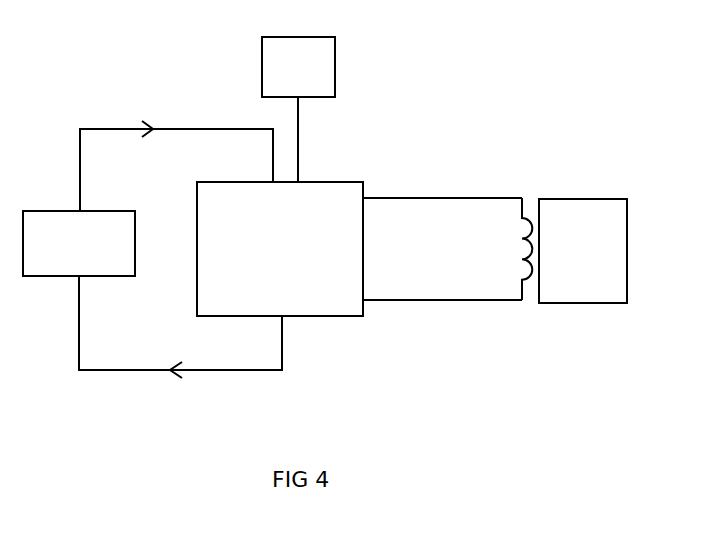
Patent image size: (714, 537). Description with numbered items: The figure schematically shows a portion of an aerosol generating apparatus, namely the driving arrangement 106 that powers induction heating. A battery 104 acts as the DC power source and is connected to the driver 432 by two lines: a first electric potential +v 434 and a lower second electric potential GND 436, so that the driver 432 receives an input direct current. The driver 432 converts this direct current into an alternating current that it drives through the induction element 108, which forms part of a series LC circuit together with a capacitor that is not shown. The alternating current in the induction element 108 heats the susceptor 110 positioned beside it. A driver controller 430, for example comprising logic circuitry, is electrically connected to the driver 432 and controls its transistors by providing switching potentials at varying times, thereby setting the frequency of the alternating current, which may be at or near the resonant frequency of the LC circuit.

The battery 104 is at (56, 256).
The driving arrangement 106 is at (386, 85).
The induction element 108 is at (447, 249).
The susceptor 110 is at (562, 264).
The driver controller 430 is at (278, 80).
The driver 432 is at (260, 261).
The first electric potential +v 434 is at (176, 152).
The second electric potential GND 436 is at (180, 345).